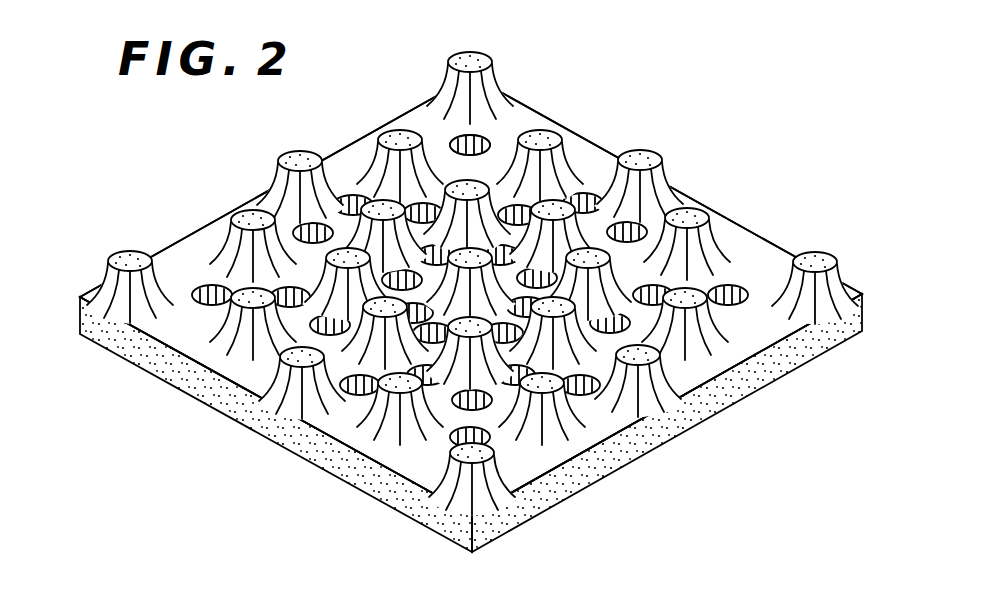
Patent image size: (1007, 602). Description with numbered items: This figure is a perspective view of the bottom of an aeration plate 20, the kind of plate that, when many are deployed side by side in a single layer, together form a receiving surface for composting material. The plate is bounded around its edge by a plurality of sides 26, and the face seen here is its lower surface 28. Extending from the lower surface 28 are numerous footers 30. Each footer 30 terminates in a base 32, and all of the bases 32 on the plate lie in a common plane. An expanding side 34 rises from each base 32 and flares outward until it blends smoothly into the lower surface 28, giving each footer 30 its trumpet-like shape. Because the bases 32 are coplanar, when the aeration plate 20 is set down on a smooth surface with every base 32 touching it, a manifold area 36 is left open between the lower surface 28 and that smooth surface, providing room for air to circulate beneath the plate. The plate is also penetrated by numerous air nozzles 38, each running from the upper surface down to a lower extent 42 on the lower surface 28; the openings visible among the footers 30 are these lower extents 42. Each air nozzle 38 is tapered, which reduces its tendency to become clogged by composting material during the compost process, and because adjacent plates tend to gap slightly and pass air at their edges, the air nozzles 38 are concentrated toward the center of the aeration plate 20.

The aeration plate 20 is at (445, 302).
The sides 26 is at (745, 378).
The lower surface 28 is at (749, 254).
The footer 30 is at (275, 164).
The base 32 is at (274, 178).
The expanding side 34 is at (106, 288).
The manifold area 36 is at (192, 247).
The air nozzle 38 is at (455, 145).
The lower extent 42 is at (485, 142).